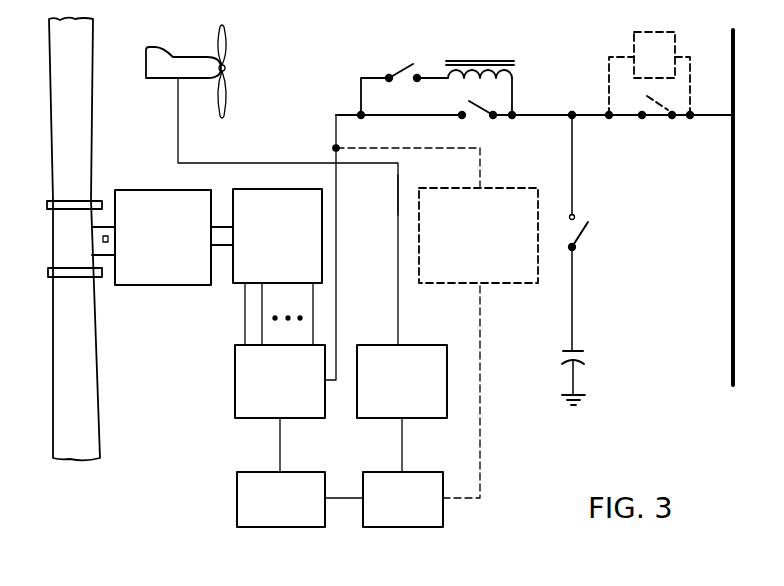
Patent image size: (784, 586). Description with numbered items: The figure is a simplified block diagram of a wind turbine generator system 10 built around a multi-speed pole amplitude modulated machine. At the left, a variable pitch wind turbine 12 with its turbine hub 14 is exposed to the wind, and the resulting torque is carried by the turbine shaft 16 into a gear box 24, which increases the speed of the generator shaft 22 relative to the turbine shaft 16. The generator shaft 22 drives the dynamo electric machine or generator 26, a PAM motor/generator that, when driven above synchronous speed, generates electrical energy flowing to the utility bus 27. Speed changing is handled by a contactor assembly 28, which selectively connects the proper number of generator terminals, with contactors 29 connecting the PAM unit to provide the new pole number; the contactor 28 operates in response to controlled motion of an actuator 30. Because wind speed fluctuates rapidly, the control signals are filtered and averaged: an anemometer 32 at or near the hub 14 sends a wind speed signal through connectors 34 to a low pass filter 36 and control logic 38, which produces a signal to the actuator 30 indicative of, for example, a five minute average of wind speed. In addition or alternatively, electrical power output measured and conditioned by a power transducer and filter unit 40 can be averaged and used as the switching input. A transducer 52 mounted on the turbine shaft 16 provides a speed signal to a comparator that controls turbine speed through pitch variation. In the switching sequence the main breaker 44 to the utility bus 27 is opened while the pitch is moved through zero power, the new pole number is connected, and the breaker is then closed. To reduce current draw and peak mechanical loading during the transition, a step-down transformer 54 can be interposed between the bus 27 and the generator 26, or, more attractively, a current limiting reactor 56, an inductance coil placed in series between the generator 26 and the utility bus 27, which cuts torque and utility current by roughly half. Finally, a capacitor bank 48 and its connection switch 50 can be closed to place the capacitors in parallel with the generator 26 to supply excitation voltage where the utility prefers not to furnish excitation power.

The wind turbine generator system 10 is at (32, 178).
The wind turbine 12 is at (86, 32).
The turbine hub 14 is at (60, 247).
The turbine shaft 16 is at (106, 252).
The generator shaft 22 is at (220, 247).
The gear box 24 is at (147, 249).
The generator 26 is at (267, 248).
The utility bus 27 is at (735, 228).
The contactor assembly 28 is at (265, 396).
The contactors 29 is at (243, 325).
The actuator 30 is at (267, 510).
The anemometer 32 is at (185, 67).
The connectors 34 is at (398, 193).
The low pass filter 36 is at (395, 396).
The control logic 38 is at (392, 510).
The power transducer and filter unit 40 is at (467, 251).
The main breaker 44 is at (478, 120).
The capacitor bank 48 is at (586, 357).
The connection switch 50 is at (588, 227).
The transducer 52 is at (105, 236).
The step-down transformer 54 is at (645, 72).
The current limiting reactor 56 is at (484, 58).